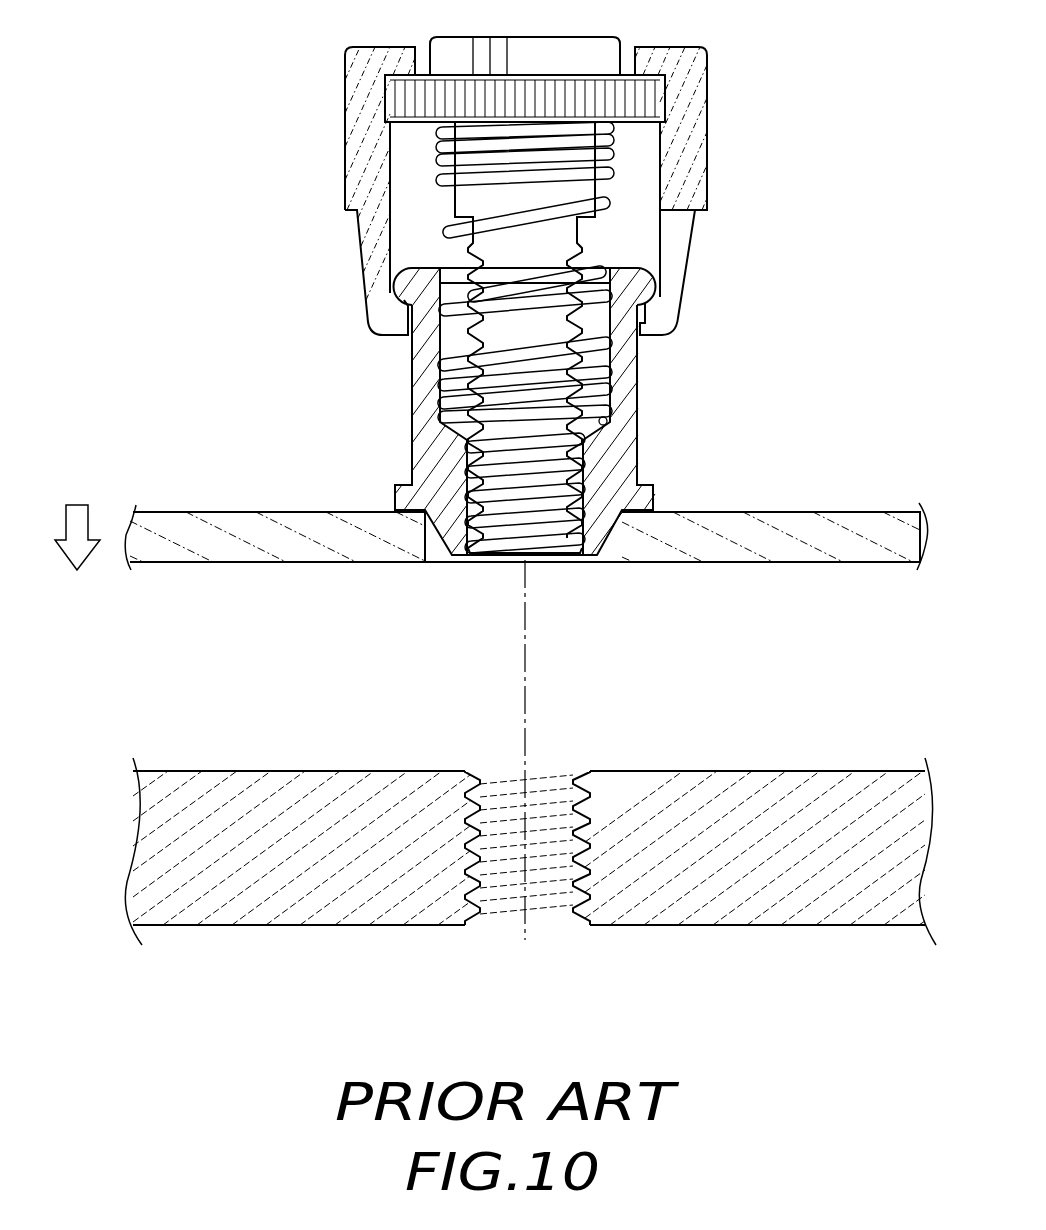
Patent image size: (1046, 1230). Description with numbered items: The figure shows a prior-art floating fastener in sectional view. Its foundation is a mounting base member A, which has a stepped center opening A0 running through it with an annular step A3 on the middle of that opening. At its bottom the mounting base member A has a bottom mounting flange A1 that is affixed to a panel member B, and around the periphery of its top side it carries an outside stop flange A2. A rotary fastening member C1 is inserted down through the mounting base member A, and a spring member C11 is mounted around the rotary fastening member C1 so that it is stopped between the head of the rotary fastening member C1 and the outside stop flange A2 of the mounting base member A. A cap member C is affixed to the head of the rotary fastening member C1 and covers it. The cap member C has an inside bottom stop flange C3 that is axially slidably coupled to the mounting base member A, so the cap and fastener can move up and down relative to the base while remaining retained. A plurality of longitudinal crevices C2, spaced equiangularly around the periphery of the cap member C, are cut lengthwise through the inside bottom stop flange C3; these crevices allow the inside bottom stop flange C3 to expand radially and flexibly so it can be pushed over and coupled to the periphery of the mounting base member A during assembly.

The mounting base member A is at (531, 435).
The stepped center opening A0 is at (597, 310).
The bottom mounting flange A1 is at (597, 558).
The outside stop flange A2 is at (408, 290).
The annular step A3 is at (445, 450).
The panel member B is at (820, 525).
The cap member C is at (546, 186).
The rotary fastening member C1 is at (585, 190).
The spring member C11 is at (593, 348).
The longitudinal crevices C2 is at (673, 228).
The inside bottom stop flange C3 is at (400, 315).